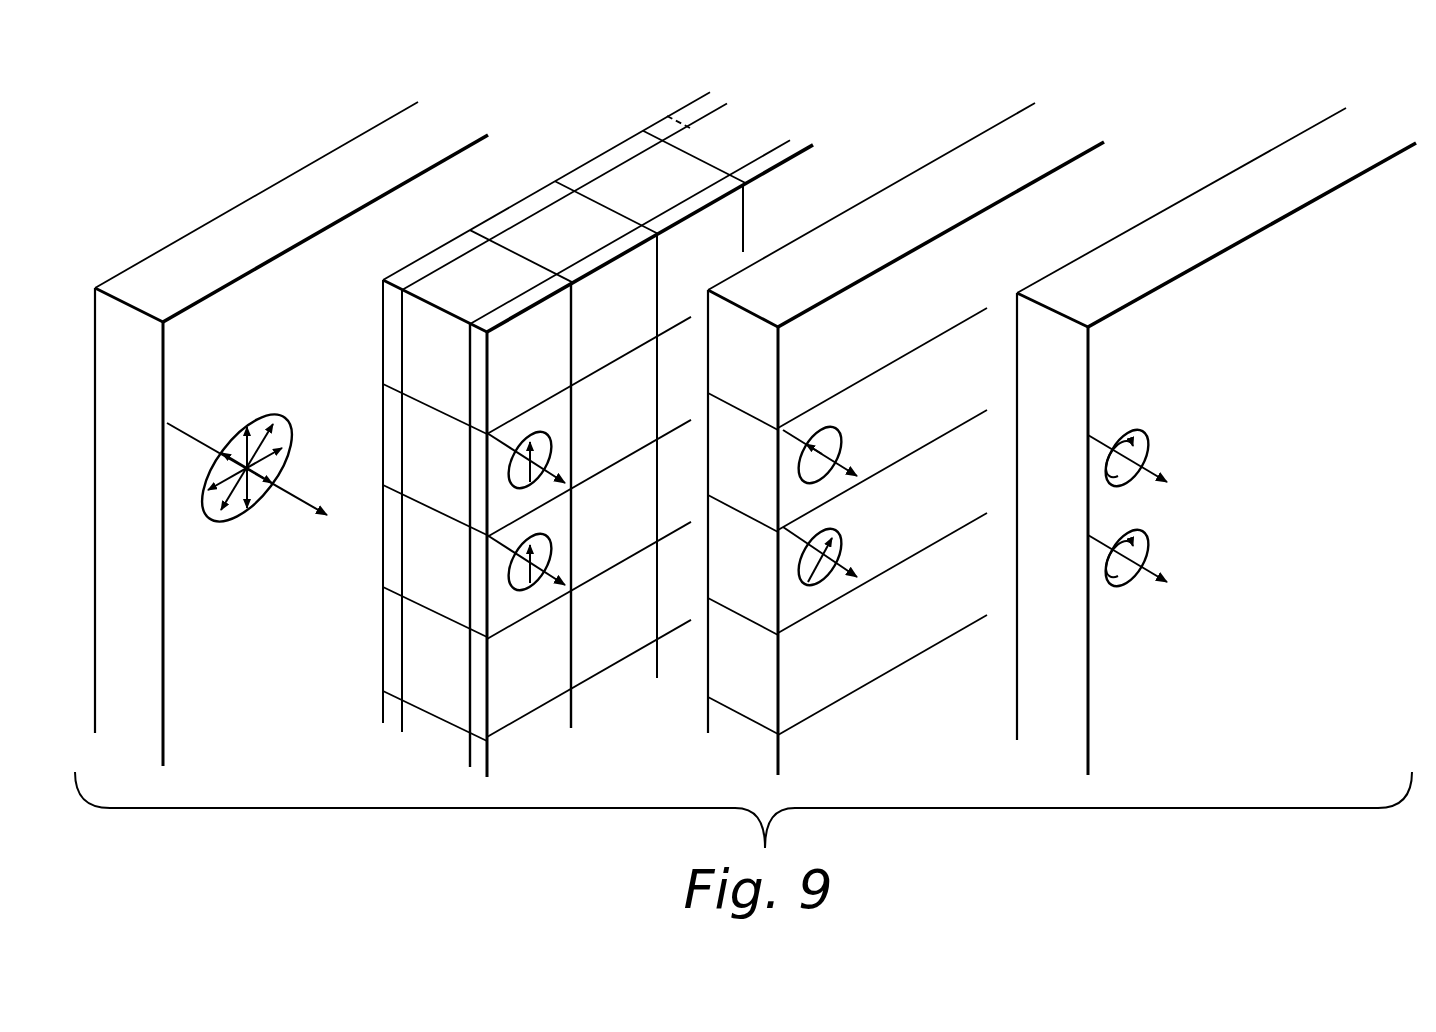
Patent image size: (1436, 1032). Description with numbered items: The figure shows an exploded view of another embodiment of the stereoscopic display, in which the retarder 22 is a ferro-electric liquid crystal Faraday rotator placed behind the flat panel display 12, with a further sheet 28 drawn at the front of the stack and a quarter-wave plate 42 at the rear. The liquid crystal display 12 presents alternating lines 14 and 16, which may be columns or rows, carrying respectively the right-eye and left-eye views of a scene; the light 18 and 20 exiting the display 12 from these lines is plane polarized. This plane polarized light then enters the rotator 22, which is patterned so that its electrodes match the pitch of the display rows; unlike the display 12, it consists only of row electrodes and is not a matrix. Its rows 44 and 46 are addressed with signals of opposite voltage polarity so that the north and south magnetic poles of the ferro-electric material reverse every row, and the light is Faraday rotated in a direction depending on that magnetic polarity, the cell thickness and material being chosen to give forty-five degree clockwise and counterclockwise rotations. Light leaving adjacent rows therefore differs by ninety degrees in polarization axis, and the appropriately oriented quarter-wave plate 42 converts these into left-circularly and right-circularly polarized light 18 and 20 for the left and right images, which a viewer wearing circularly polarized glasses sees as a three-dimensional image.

The flat panel display 12 is at (790, 140).
The alternating lines 14 is at (516, 367).
The alternating lines 16 is at (541, 427).
The light 18 is at (559, 572).
The light 20 is at (559, 472).
The retarder 22 is at (1091, 147).
The polarizer 28 is at (418, 103).
The ¼-wave plate 42 is at (1344, 110).
The rows 44 is at (882, 325).
The rows 46 is at (916, 411).